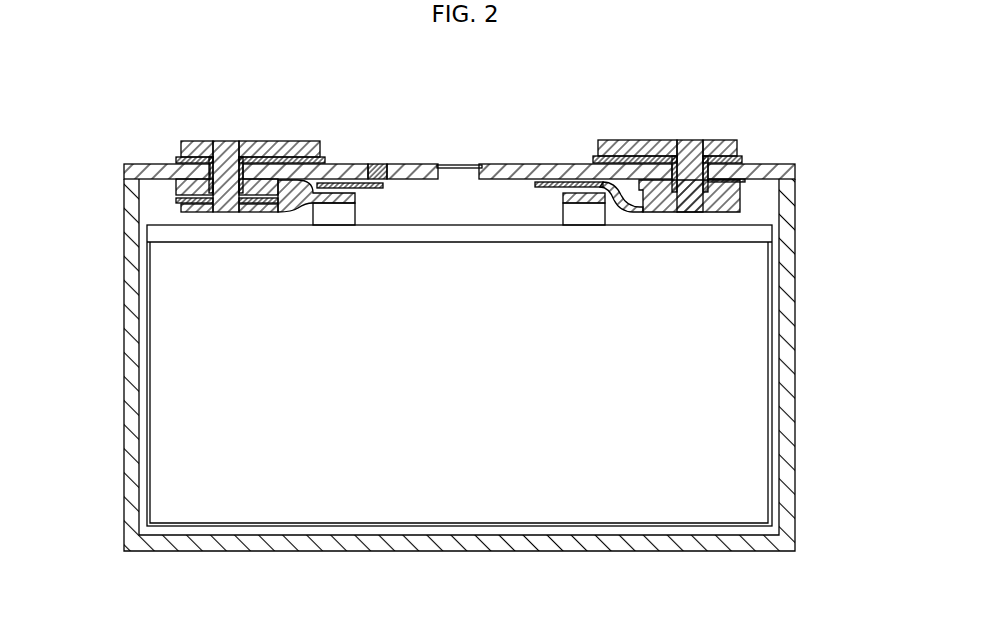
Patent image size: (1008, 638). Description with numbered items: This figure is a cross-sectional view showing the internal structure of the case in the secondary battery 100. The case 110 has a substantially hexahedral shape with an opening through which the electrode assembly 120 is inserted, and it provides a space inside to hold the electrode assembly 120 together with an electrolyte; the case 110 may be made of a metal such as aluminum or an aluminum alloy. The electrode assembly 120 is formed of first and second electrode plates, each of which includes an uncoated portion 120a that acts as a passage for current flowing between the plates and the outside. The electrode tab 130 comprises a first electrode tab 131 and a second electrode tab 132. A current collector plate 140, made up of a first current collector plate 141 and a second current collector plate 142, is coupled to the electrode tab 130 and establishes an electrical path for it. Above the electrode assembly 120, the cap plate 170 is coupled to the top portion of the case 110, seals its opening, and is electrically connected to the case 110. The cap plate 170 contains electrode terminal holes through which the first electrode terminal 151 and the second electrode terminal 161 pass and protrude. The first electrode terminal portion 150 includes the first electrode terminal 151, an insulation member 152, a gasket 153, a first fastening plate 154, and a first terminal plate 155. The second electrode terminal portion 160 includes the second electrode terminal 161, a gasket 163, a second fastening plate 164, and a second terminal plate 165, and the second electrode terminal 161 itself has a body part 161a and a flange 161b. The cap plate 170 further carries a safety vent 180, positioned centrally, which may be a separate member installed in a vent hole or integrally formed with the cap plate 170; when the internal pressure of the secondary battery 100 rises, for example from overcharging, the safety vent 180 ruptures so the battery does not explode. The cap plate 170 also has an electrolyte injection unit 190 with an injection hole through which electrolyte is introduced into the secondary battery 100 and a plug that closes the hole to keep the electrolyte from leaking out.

The secondary battery 100 is at (84, 73).
The case 110 is at (785, 409).
The electrode assembly 120 is at (512, 374).
The uncoated portion 120a is at (762, 234).
The electrode tab 130 is at (412, 251).
The first electrode tab 131 is at (338, 216).
The second electrode tab 132 is at (574, 230).
The current collector plate 140 is at (459, 147).
The first current collector plate 141 is at (347, 182).
The second current collector plate 142 is at (637, 147).
The first electrode terminal portion 150 is at (199, 149).
The first electrode terminal 151 is at (192, 190).
The insulation member 152 is at (177, 201).
The gasket 153 is at (180, 182).
The first fastening plate 154 is at (178, 158).
The first terminal plate 155 is at (195, 142).
The second electrode terminal portion 160 is at (716, 139).
The second electrode terminal 161 is at (731, 145).
The body part 161a is at (690, 140).
The flange 161b is at (662, 173).
The gasket 163 is at (750, 178).
The second fastening plate 164 is at (741, 157).
The second terminal plate 165 is at (720, 139).
The cap plate 170 is at (459, 169).
The safety vent 180 is at (459, 170).
The electrolyte injection unit 190 is at (384, 170).